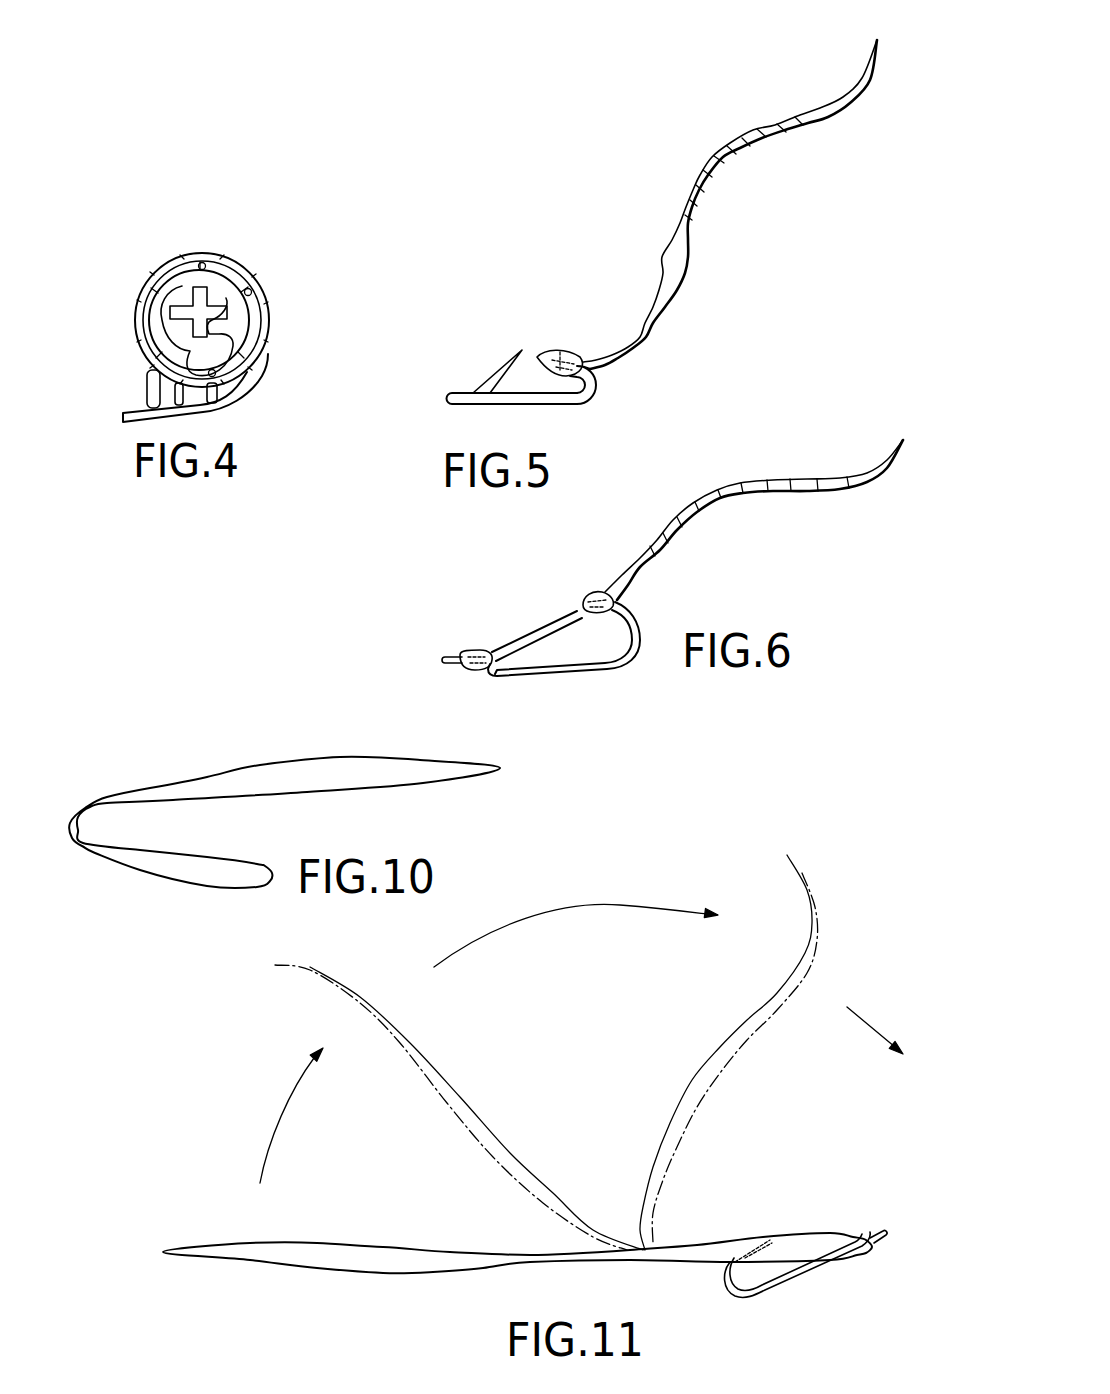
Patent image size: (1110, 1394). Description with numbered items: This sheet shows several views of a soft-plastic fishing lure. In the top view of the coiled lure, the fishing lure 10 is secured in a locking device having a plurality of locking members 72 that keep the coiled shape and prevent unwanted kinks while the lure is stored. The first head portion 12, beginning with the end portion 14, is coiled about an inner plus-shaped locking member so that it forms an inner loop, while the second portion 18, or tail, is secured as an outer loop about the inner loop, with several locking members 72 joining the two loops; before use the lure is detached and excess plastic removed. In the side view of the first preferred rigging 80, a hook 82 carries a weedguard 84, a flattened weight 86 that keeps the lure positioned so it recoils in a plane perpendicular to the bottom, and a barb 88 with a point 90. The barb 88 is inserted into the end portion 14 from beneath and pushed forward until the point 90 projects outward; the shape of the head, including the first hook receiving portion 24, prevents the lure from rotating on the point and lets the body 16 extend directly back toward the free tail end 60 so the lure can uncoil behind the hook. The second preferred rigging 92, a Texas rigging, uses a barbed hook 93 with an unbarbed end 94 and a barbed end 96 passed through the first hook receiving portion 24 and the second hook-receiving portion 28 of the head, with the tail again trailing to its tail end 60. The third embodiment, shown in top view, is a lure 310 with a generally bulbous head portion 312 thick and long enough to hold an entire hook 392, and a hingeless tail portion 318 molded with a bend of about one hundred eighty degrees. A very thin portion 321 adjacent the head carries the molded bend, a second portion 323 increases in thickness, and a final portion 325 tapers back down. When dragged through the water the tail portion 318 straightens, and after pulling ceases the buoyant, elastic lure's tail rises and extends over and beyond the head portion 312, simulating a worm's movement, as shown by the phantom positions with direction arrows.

In FIG. 4, the fishing lure 10 is at (207, 308).
In FIG. 6, the fishing lure 10 is at (658, 571).
In FIG. 4, the first head portion 12 is at (160, 313).
In FIG. 4, the end portion 14 is at (230, 360).
In FIG. 5, the end portion 14 is at (562, 350).
In FIG. 6, the end portion 14 is at (481, 653).
In FIG. 5, the body 16 is at (660, 308).
In FIG. 6, the body 16 is at (523, 635).
In FIG. 4, the second portion 18 is at (268, 320).
In FIG. 5, the first hook receiving portion 24 is at (560, 368).
In FIG. 6, the first hook receiving portion 24 is at (480, 672).
In FIG. 6, the second hook-receiving portion 28 is at (595, 598).
In FIG. 5, the tail tip 60 is at (873, 57).
In FIG. 6, the tail tip 60 is at (894, 464).
In FIG. 4, the locking members 72 is at (238, 316).
In FIG. 5, the first preferred rigging 80 is at (659, 234).
In FIG. 5, the hook 82 is at (572, 404).
In FIG. 5, the weedguard 84 is at (501, 362).
In FIG. 5, the flattened weight 86 is at (516, 404).
In FIG. 5, the barb 88 is at (575, 355).
In FIG. 6, the barb 88 is at (609, 595).
In FIG. 5, the point 90 is at (546, 358).
In FIG. 6, the second preferred rigging 92 is at (658, 571).
In FIG. 6, the barbed hook 93 is at (641, 628).
In FIG. 6, the unbarbed end 94 is at (447, 658).
In FIG. 6, the barbed end 96 is at (628, 609).
In FIG. 10, the lure 310 is at (274, 801).
In FIG. 10, the head portion 312 is at (185, 881).
In FIG. 11, the head portion 312 is at (787, 1233).
In FIG. 10, the tail portion 318 is at (315, 768).
In FIG. 11, the tail portion 318 is at (340, 1245).
In FIG. 10, the portion 321 is at (76, 847).
In FIG. 11, the portion 321 is at (650, 1266).
In FIG. 10, the second portion 323 is at (200, 785).
In FIG. 11, the second portion 323 is at (497, 1269).
In FIG. 10, the final portion 325 is at (425, 784).
In FIG. 11, the final portion 325 is at (297, 1271).
In FIG. 11, the hook 392 is at (773, 1292).